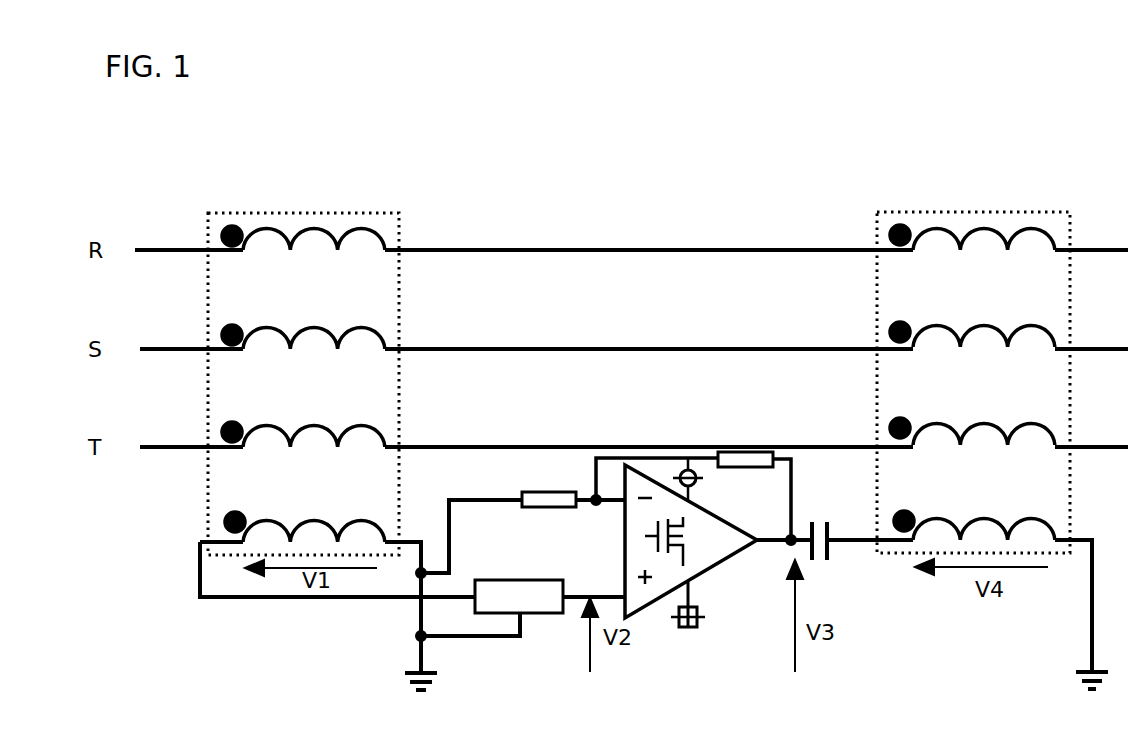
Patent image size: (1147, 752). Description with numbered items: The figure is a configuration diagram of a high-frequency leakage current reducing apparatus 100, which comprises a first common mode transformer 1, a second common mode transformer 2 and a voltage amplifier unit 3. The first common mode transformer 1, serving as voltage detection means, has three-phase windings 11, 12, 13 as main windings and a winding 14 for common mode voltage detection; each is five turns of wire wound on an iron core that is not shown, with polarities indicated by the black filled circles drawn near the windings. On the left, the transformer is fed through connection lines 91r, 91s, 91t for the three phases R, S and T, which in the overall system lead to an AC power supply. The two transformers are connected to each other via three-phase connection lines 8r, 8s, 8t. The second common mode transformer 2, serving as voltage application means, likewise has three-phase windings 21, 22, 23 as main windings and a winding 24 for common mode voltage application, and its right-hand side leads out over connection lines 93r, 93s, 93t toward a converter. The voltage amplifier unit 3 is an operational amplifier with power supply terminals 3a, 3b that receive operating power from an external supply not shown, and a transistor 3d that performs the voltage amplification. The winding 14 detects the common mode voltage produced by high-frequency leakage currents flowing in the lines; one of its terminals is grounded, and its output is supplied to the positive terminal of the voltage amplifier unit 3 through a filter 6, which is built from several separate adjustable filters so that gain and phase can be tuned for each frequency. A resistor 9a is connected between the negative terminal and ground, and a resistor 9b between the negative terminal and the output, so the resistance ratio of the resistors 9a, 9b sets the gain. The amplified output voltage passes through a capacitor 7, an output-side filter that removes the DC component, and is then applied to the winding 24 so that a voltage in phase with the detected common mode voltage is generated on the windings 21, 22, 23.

The first common mode transformer 1 is at (224, 213).
The second common mode transformer 2 is at (937, 212).
The high-frequency leakage current reducing apparatus 100 is at (542, 196).
The connection line for phase R 91r is at (162, 249).
The connection line for phase S 91s is at (162, 348).
The connection line for phase T 91t is at (162, 446).
The three-phase connection line 8r is at (457, 249).
The three-phase connection line 8s is at (457, 348).
The three-phase connection line 8t is at (457, 446).
The connection line for phase R 93r is at (1119, 249).
The connection line for phase S 93s is at (1119, 348).
The connection line for phase T 93t is at (1119, 446).
The three-phase winding 11 is at (246, 251).
The three-phase winding 12 is at (246, 350).
The three-phase winding 13 is at (246, 448).
The winding for common mode voltage detection 14 is at (375, 519).
The three-phase winding 21 is at (916, 251).
The three-phase winding 22 is at (916, 348).
The three-phase winding 23 is at (916, 446).
The winding for common mode voltage application 24 is at (1035, 519).
The resistor 9a is at (552, 491).
The resistor 9b is at (748, 452).
The filter 6 is at (519, 578).
The voltage amplifier unit 3 is at (712, 566).
The power supply terminal 3a is at (689, 470).
The power supply terminal 3b is at (688, 628).
The transistor 3d is at (683, 536).
The capacitor 7 is at (830, 566).